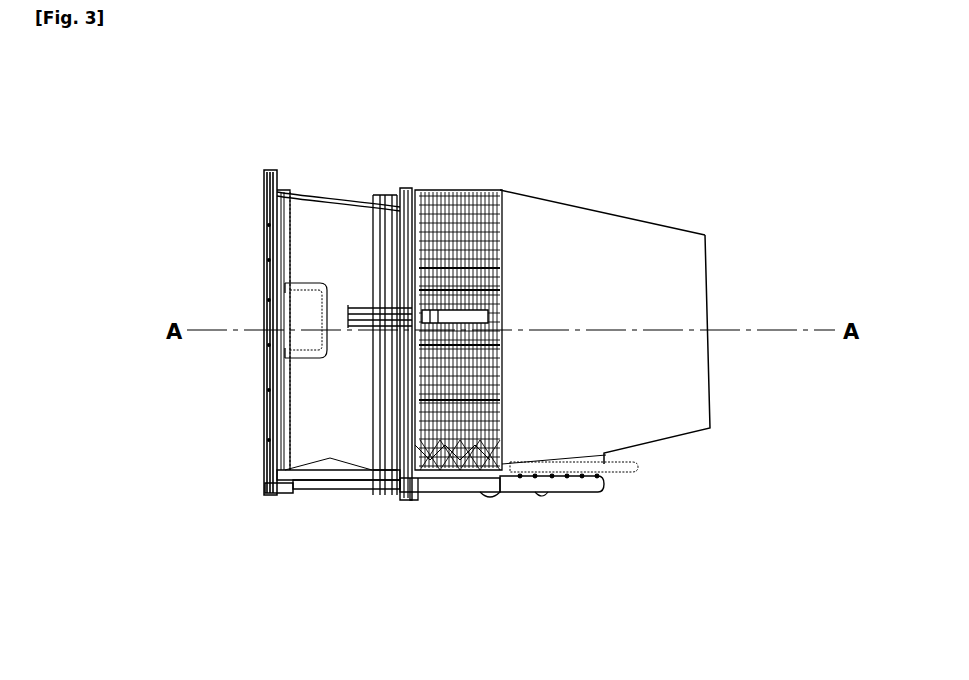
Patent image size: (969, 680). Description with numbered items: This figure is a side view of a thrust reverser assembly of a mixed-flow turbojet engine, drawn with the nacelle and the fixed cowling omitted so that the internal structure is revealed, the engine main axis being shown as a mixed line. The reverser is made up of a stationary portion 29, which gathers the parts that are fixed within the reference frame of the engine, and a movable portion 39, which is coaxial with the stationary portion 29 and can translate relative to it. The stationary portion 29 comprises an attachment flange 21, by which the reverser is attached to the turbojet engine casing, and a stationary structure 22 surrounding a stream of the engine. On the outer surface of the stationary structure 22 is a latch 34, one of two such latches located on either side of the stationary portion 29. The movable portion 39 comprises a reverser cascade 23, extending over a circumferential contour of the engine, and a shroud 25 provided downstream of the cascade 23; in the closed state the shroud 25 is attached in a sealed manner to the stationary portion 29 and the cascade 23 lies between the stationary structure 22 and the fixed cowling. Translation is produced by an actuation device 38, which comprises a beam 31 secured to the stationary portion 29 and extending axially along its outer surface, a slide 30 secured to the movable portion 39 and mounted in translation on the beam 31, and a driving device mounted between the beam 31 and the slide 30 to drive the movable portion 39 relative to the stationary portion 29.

The attachment flange 21 is at (267, 170).
The stationary structure 22 is at (344, 228).
The reverser cascade 23 is at (451, 192).
The shroud 25 is at (651, 258).
The stationary portion 29 is at (330, 148).
The slide 30 is at (580, 478).
The beam 31 is at (338, 478).
The latch 34 is at (300, 305).
The actuation device 38 is at (438, 498).
The movable portion 39 is at (627, 179).